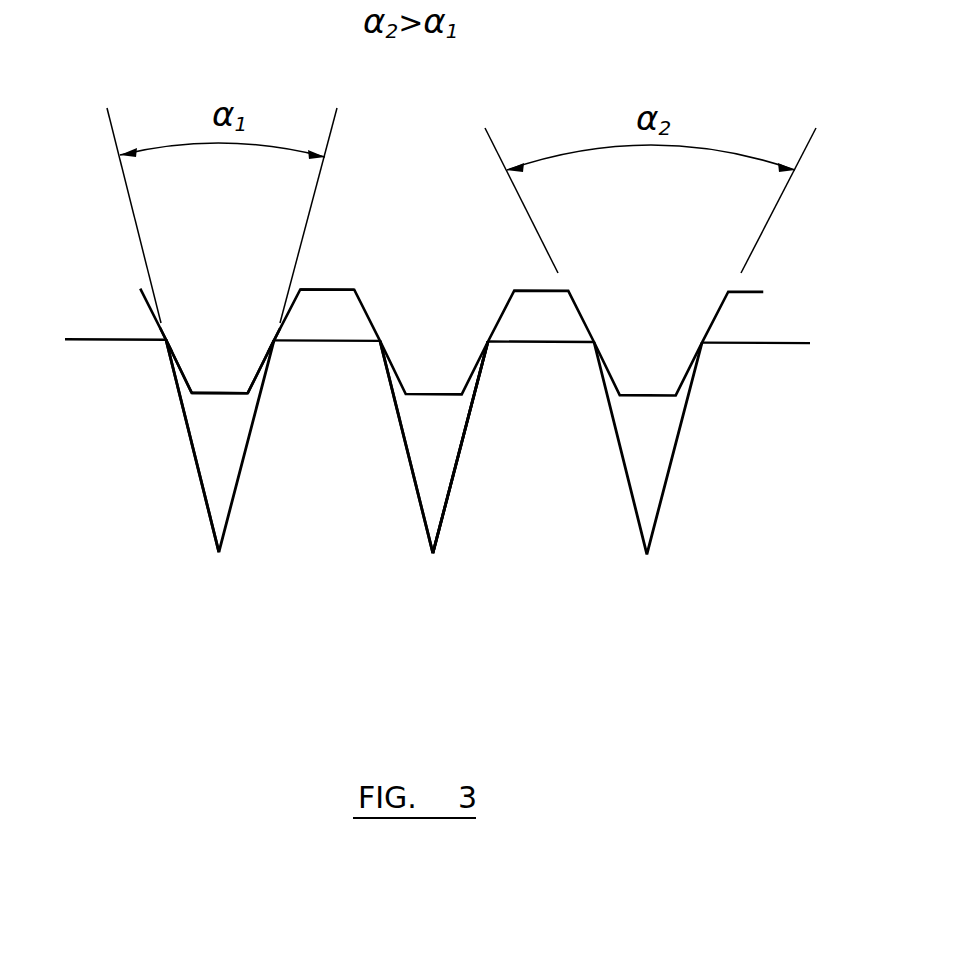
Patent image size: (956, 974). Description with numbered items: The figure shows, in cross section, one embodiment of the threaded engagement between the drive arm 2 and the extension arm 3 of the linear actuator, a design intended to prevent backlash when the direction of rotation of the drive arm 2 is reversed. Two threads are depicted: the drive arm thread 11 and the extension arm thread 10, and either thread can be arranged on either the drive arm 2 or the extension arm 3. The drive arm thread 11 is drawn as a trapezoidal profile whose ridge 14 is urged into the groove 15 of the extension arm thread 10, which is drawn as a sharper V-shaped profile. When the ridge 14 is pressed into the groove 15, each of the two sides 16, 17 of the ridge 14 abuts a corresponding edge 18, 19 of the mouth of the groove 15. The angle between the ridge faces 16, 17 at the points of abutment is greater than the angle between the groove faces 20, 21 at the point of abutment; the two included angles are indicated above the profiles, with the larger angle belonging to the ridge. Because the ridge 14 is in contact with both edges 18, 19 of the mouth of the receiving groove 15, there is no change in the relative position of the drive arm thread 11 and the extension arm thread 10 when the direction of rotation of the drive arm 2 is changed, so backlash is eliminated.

The drive arm 2 is at (124, 310).
The extension arm 3 is at (146, 437).
The thread 10 is at (458, 468).
The thread 11 is at (331, 289).
The ridge 14 is at (222, 395).
The groove 15 is at (212, 462).
The ridge side 16 is at (163, 333).
The ridge side 17 is at (280, 333).
The edge of groove mouth 18 is at (163, 345).
The edge of groove mouth 19 is at (278, 343).
The groove face 20 is at (405, 438).
The groove face 21 is at (463, 442).